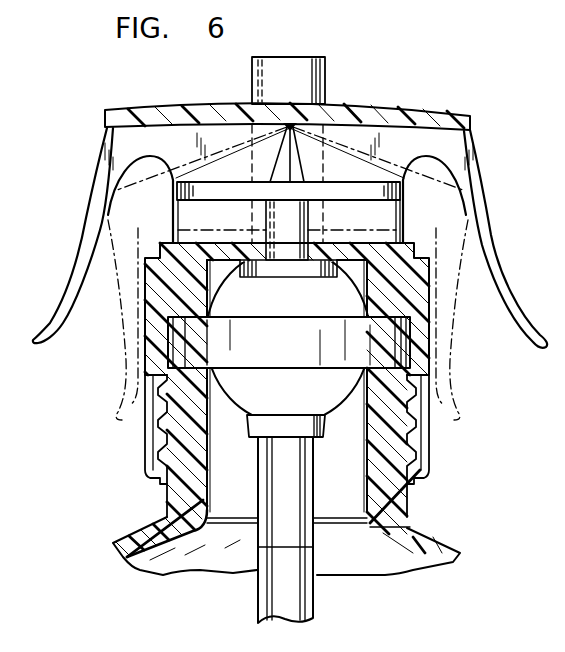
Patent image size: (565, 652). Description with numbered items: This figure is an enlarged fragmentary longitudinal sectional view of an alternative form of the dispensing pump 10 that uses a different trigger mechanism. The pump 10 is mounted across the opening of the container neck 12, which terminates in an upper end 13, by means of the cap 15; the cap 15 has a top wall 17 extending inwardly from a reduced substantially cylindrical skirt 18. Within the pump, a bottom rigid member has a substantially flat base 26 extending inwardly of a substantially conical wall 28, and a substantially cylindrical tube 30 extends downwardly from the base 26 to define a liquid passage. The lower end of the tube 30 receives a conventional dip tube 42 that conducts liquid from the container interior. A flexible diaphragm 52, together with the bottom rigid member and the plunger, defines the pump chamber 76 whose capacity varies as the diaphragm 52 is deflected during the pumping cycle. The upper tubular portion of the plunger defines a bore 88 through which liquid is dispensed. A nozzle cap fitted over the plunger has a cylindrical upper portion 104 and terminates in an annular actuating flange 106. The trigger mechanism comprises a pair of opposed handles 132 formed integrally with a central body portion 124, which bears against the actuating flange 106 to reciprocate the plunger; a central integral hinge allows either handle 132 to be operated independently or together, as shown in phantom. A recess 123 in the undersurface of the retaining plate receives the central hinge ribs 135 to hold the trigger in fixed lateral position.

The pump 10 is at (496, 172).
The neck 12 is at (390, 458).
The upper end 13 is at (559, 439).
The cap 15 is at (440, 447).
The top wall 17 is at (383, 273).
The skirt 18 is at (410, 295).
The base 26 is at (313, 437).
The conical wall 28 is at (245, 428).
The tube 30 is at (263, 537).
The dip tube 42 is at (315, 597).
The diaphragm 52 is at (288, 292).
The pump chamber 76 is at (268, 393).
The bore 88 is at (143, 247).
The cylindrical upper portion 104 is at (300, 56).
The actuating flange 106 is at (396, 200).
The recess 123 is at (298, 106).
The central body portion 124 is at (396, 105).
The handles 132 is at (98, 152).
The central hinge ribs 135 is at (284, 124).